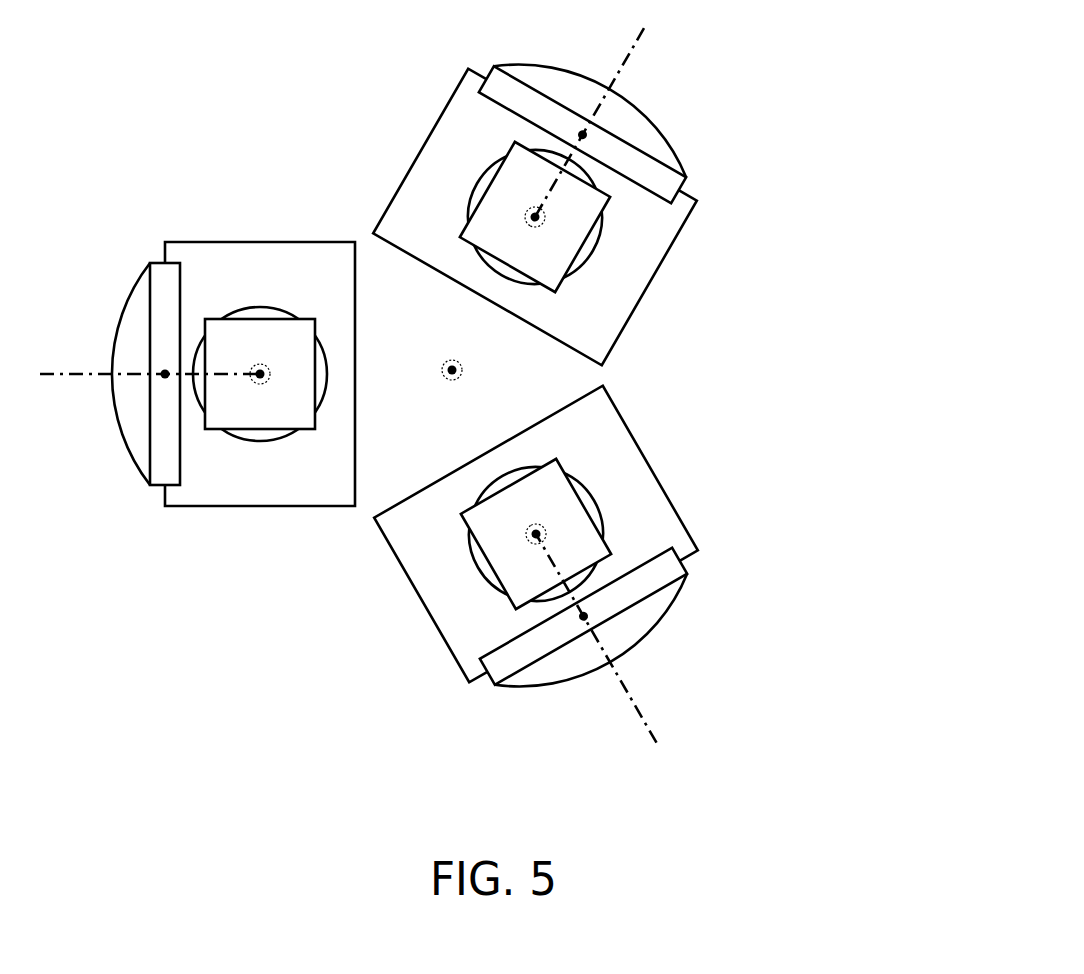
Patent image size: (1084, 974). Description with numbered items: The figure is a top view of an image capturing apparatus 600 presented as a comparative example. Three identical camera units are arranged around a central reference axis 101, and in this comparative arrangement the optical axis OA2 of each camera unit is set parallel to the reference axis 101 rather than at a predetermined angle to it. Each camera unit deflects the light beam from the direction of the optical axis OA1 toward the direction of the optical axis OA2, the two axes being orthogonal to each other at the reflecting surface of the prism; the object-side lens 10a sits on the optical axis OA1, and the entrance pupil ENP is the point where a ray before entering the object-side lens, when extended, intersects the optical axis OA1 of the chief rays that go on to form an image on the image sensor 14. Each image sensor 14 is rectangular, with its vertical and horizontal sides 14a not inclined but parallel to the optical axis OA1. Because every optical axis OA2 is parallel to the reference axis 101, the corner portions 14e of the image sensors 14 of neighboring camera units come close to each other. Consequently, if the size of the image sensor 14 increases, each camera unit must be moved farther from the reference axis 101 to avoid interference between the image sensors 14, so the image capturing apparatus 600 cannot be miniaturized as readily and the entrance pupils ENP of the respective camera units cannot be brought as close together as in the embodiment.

The image capturing apparatus 600 is at (744, 35).
The image sensor 14 is at (625, 493).
The side of the image sensor 14a is at (630, 427).
The corner portion of the image sensor 14e is at (602, 362).
The lens 10a is at (530, 690).
The reference axis 101 is at (462, 372).
The optical axis OA1 is at (645, 723).
The optical axis OA2 is at (540, 535).
The entrance pupil ENP is at (586, 614).